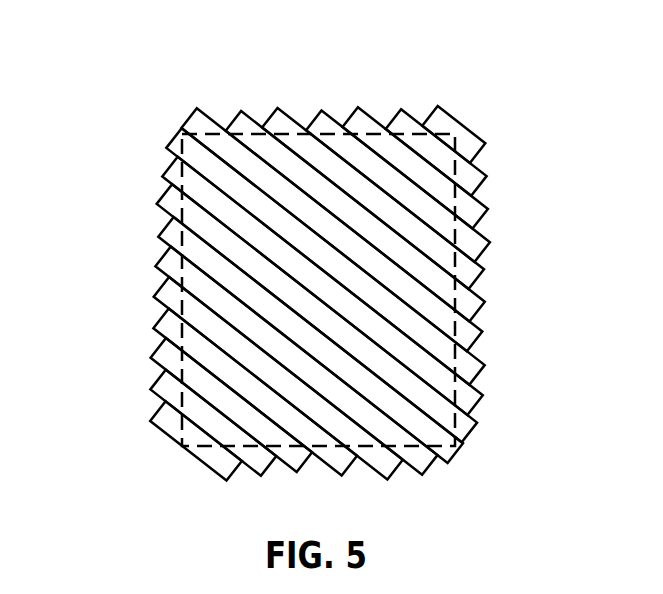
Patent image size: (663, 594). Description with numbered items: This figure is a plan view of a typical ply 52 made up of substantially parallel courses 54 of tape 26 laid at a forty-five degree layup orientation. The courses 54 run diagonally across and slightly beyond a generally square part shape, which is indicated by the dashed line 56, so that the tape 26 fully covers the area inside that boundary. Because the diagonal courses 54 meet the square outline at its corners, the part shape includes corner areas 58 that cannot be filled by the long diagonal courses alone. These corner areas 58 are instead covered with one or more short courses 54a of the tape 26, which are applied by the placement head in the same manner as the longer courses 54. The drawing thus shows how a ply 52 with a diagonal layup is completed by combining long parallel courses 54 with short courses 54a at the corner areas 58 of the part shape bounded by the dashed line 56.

The ply 52 is at (312, 270).
The tape 26 is at (252, 168).
The courses 54 is at (396, 373).
The short courses 54a is at (402, 122).
The dashed line 56 is at (460, 348).
The corner areas 58 is at (474, 168).